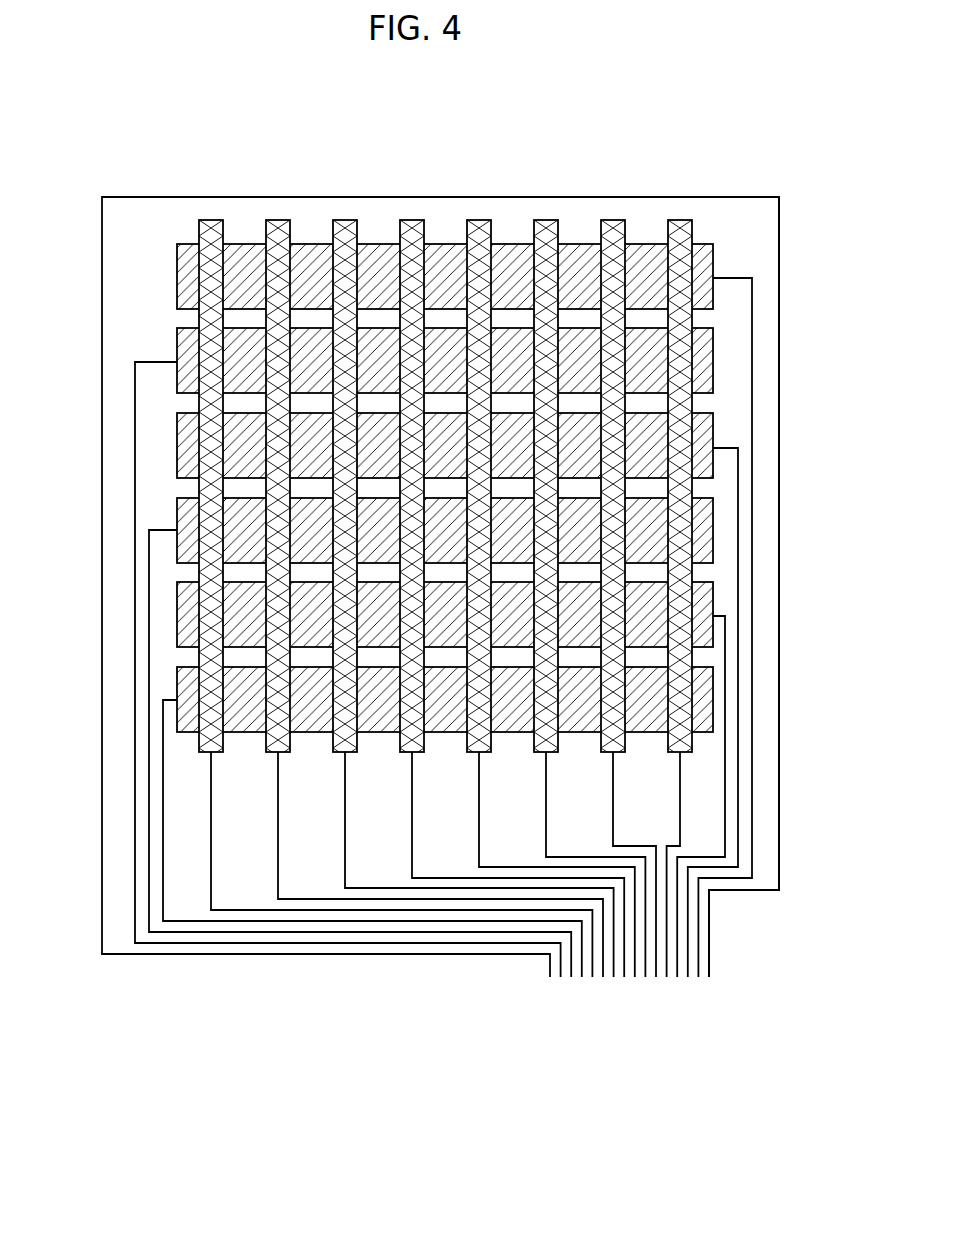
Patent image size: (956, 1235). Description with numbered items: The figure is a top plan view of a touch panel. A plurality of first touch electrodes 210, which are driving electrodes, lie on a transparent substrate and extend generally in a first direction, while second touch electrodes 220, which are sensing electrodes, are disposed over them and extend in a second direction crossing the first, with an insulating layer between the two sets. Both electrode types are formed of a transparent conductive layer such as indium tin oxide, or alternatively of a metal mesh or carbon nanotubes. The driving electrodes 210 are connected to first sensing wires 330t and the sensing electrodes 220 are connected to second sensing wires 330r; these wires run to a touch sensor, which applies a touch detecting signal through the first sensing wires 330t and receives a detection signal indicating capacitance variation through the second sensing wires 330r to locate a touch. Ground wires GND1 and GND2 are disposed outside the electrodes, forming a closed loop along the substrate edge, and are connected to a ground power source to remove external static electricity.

The first touch electrodes 210 is at (178, 273).
The second touch electrodes 220 is at (209, 220).
The first sensing wires 330t is at (148, 361).
The second sensing wires 330r is at (211, 831).
The ground wire GND1 is at (458, 956).
The ground wire GND2 is at (712, 932).